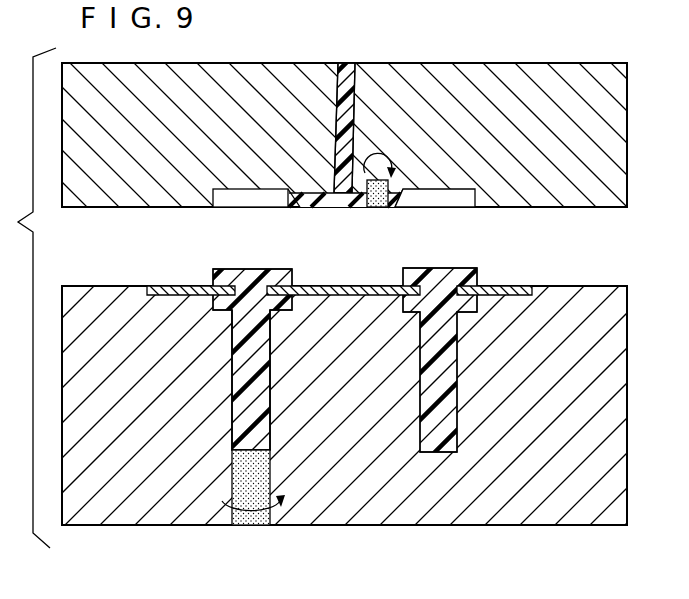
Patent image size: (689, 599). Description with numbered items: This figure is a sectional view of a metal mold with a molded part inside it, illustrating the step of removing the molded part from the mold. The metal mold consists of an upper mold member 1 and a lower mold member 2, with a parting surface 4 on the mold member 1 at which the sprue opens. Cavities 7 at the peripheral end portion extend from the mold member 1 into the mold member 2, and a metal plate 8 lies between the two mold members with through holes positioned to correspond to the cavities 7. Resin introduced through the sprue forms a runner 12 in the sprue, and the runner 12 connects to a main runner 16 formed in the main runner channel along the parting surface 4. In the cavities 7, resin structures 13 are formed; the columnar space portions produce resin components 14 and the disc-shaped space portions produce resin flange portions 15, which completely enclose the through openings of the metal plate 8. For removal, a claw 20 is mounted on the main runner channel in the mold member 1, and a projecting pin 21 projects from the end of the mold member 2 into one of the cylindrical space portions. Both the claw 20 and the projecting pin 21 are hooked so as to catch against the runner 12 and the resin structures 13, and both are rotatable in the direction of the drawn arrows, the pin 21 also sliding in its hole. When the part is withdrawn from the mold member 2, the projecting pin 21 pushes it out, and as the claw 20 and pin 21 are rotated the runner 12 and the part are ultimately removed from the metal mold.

The mold member 1 is at (612, 143).
The mold member 2 is at (597, 303).
The parting surface 4 is at (155, 207).
The cavities 7 is at (240, 195).
The metal plate 8 is at (517, 291).
The runner 12 is at (357, 78).
The resin structures 13 is at (422, 374).
The resin components 14 is at (265, 380).
The resin flange portions 15 is at (245, 262).
The main runner 16 is at (337, 200).
The claw 20 is at (383, 207).
The projecting pin 21 is at (243, 483).